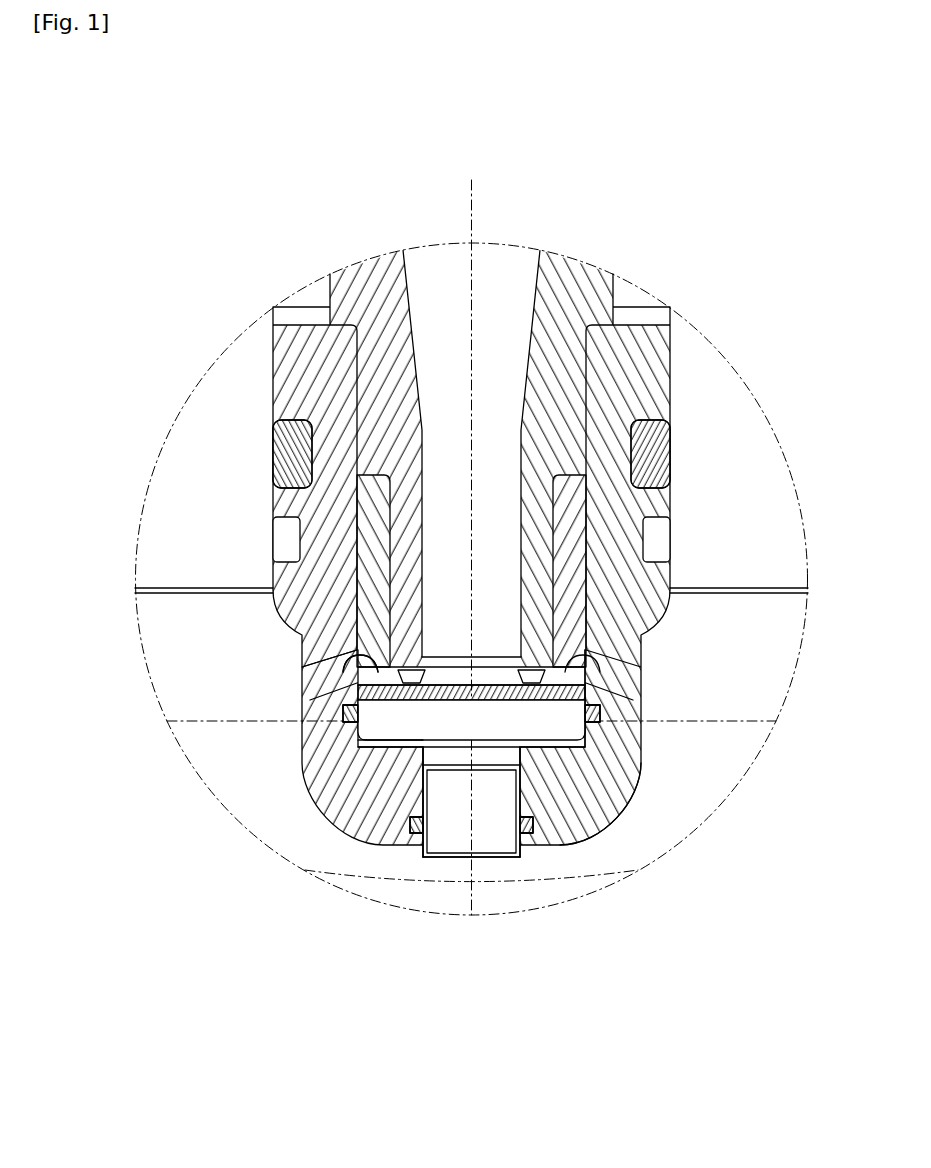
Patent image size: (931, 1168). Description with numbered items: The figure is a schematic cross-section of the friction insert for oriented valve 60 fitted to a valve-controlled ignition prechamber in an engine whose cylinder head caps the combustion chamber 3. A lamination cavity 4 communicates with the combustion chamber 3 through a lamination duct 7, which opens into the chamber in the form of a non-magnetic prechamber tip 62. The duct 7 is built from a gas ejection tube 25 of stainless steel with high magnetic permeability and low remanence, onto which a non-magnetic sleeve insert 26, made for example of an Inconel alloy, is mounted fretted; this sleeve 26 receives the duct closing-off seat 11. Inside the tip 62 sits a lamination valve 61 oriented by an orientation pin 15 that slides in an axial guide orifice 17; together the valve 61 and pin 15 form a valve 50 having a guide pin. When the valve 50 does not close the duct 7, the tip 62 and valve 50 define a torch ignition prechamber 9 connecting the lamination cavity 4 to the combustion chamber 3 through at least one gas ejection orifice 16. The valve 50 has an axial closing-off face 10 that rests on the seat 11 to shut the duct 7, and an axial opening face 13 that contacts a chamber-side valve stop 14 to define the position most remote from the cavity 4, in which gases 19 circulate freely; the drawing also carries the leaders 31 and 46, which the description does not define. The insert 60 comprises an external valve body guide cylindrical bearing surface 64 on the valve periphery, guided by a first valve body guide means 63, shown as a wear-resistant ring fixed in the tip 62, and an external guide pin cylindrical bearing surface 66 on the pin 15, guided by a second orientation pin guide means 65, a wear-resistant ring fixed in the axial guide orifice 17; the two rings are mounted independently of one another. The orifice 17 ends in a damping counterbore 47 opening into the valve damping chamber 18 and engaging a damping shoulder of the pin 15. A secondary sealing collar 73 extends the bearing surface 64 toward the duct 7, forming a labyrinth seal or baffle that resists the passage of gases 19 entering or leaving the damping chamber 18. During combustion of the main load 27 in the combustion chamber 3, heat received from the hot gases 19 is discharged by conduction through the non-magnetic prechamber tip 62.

The combustion chamber 3 is at (700, 797).
The lamination cavity 4 is at (507, 258).
The lamination duct 7 is at (512, 452).
The torch ignition prechamber 9 is at (643, 672).
The axial closing-off face 10 is at (458, 690).
The duct closing-off seat 11 is at (373, 675).
The axial opening face 13 is at (413, 748).
The chamber-side valve stop 14 is at (377, 732).
The orientation pin 15 is at (457, 835).
The gas ejection orifice 16 is at (422, 673).
The axial guide orifice 17 is at (500, 842).
The valve damping chamber 18 is at (410, 752).
The gases 19 is at (442, 276).
The gas ejection tube 25 is at (533, 553).
The non-magnetic sleeve insert 26 is at (568, 580).
The main load 27 is at (666, 817).
The fuel flow 31 is at (462, 291).
The tip shoulder 46 is at (560, 778).
The damping counterbore 47 is at (560, 768).
The valve having a guide pin 50 is at (416, 752).
The friction insert for oriented valve 60 is at (603, 713).
The lamination valve 61 is at (553, 746).
The non-magnetic prechamber tip 62 is at (610, 797).
The first valve body guide means 63 is at (343, 713).
The external valve body guide cylindrical bearing surface 64 is at (483, 700).
The second orientation pin guide means 65 is at (413, 832).
The external guide pin cylindrical bearing surface 66 is at (440, 835).
The secondary sealing collar 73 is at (490, 720).